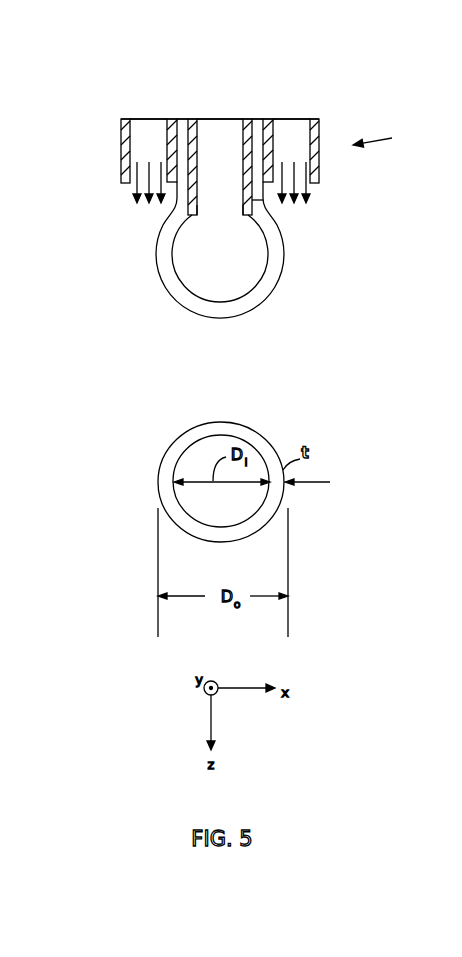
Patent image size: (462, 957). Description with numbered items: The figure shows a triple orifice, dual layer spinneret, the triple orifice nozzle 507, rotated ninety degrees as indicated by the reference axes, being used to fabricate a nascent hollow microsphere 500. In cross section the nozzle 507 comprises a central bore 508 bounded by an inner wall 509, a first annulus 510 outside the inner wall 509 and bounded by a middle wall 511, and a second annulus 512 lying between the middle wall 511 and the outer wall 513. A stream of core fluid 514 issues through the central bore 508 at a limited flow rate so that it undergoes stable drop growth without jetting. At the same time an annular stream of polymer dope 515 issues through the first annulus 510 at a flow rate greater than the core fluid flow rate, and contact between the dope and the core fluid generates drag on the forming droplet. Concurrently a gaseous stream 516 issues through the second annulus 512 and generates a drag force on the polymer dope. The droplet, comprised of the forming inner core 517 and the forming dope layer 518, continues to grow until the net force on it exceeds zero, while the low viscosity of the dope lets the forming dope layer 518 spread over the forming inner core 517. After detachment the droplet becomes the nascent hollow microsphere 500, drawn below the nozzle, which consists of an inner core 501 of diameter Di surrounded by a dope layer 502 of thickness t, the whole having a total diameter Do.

The nascent hollow microsphere 500 is at (195, 460).
The inner core 501 is at (205, 452).
The dope layer 502 is at (253, 440).
The triple orifice nozzle 507 is at (390, 138).
The central bore 508 is at (219, 145).
The inner wall 509 is at (195, 108).
The first annulus 510 is at (183, 130).
The middle wall 511 is at (170, 130).
The second annulus 512 is at (153, 133).
The outer wall 513 is at (123, 135).
The core fluid 514 is at (220, 202).
The polymer dope 515 is at (257, 182).
The gaseous stream 516 is at (295, 167).
The forming inner core 517 is at (218, 275).
The forming dope layer 518 is at (165, 268).